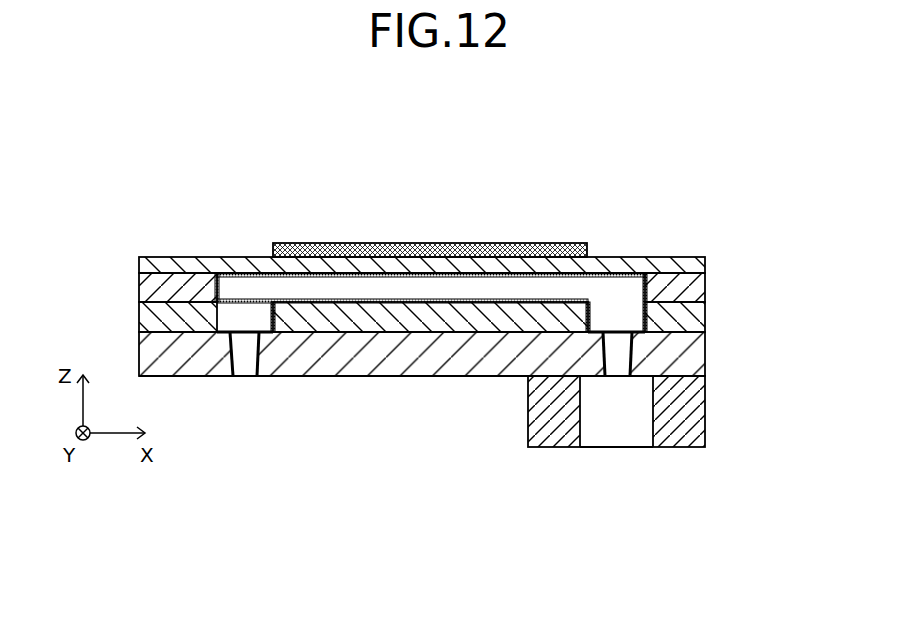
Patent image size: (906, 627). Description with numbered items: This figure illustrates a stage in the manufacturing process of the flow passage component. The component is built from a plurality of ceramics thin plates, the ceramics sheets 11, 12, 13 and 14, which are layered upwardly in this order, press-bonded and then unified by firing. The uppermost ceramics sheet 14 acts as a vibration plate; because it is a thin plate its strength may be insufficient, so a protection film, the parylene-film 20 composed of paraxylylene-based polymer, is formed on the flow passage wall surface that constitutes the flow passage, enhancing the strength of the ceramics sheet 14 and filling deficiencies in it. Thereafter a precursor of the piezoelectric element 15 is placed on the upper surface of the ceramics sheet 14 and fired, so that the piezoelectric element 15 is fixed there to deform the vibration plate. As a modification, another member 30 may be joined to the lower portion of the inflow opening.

The ceramics sheet 11 is at (705, 360).
The ceramics sheet 12 is at (705, 323).
The ceramics sheet 13 is at (705, 290).
The ceramics sheet 14 is at (705, 268).
The piezoelectric element 15 is at (517, 243).
The protection film (parylene-film) 20 is at (343, 299).
The another member 30 is at (705, 412).